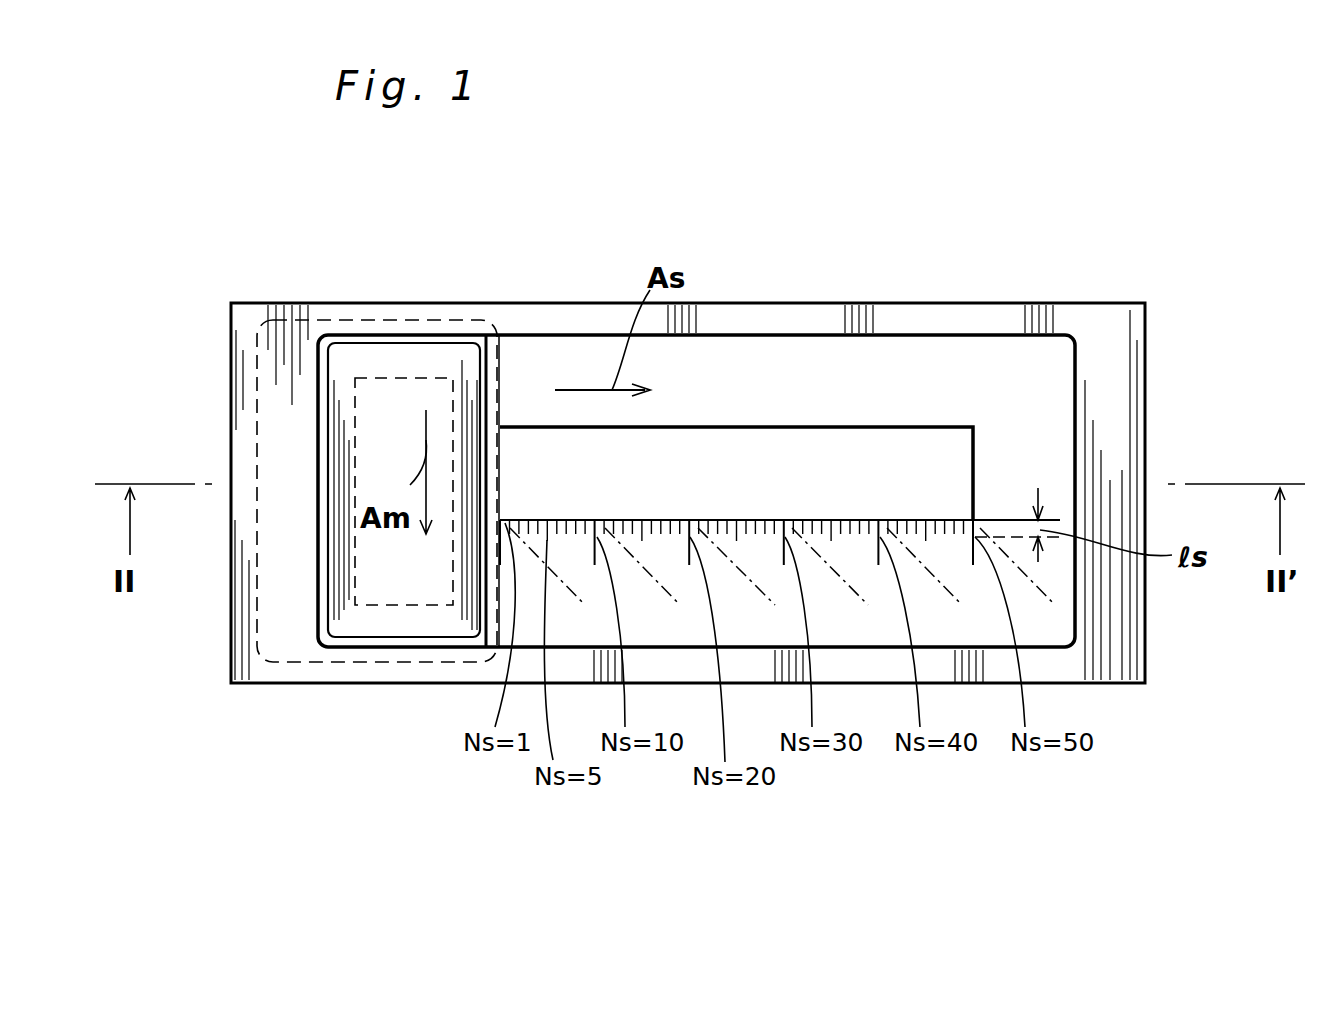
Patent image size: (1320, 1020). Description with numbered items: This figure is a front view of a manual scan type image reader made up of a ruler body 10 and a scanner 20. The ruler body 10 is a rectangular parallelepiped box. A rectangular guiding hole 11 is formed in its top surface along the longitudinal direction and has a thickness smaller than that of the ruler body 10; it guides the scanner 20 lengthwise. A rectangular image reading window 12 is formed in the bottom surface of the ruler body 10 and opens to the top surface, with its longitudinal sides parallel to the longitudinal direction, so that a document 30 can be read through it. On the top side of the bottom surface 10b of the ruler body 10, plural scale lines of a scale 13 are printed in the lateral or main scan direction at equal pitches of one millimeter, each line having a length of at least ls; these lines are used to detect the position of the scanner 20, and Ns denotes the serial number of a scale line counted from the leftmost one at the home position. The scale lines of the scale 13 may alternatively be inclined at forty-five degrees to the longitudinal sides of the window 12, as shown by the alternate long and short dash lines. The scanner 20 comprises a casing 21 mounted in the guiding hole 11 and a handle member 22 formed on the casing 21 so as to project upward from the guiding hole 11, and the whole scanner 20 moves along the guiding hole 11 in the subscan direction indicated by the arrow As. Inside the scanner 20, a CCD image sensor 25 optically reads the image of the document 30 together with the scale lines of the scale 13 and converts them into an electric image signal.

The ruler body 10 is at (957, 299).
The bottom surface 10b is at (1058, 372).
The guiding hole 11 is at (1070, 426).
The image reading window 12 is at (818, 430).
The scale 13 is at (870, 520).
The scanner 20 is at (502, 392).
The casing 21 is at (290, 683).
The handle member 22 is at (405, 625).
The CCD image sensor 25 is at (402, 378).
The document 30 is at (725, 455).